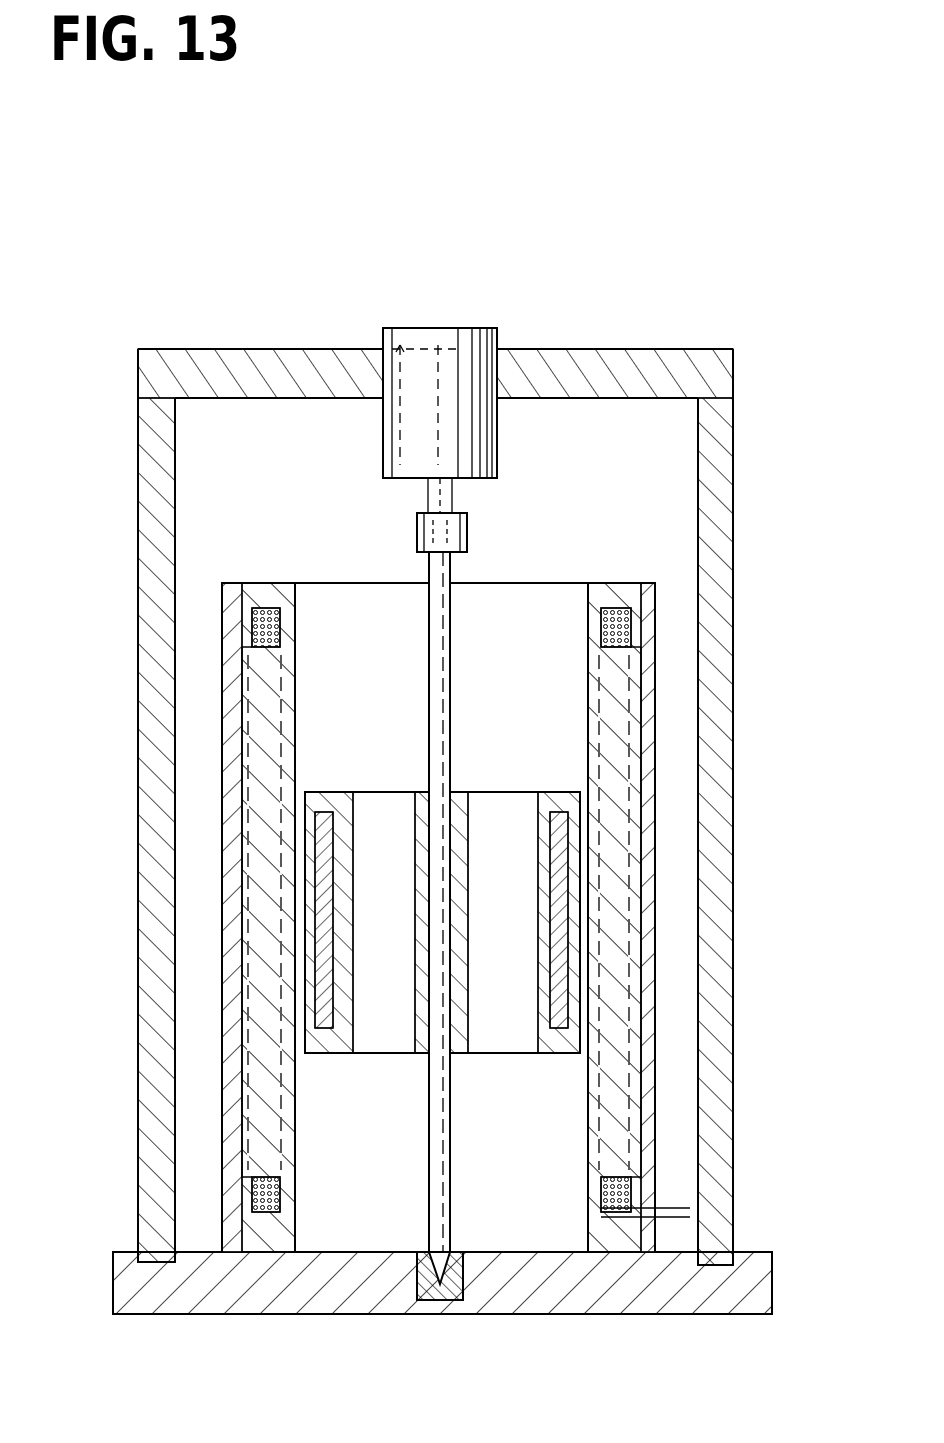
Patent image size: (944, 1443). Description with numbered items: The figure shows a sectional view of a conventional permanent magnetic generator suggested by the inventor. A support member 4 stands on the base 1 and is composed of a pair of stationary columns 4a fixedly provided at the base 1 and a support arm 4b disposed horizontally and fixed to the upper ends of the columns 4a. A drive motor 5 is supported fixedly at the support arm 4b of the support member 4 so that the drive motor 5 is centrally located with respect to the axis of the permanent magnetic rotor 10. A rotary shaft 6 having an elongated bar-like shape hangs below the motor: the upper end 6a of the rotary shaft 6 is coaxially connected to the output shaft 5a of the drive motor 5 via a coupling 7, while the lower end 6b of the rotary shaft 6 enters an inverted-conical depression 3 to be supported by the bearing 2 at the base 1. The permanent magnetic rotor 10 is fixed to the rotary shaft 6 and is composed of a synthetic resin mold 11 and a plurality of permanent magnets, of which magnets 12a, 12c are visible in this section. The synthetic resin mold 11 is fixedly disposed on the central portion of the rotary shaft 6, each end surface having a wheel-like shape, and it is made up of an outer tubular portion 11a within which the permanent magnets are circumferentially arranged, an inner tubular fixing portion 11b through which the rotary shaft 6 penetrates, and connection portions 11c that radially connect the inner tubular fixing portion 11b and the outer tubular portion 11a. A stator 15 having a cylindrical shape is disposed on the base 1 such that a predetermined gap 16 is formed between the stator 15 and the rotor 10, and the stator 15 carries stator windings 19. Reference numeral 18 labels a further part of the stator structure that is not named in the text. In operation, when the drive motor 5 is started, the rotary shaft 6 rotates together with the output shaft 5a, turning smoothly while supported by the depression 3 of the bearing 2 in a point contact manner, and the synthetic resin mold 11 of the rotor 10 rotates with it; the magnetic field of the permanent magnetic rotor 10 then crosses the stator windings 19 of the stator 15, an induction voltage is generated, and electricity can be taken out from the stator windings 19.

The base 1 is at (768, 1253).
The bearing 2 is at (473, 1252).
The inverted-conical depression 3 is at (443, 1258).
The support member 4 is at (436, 767).
The stationary column 4a is at (157, 958).
The support arm 4b is at (598, 368).
The drive motor 5 is at (420, 355).
The output shaft 5a is at (442, 497).
The rotary shaft 6 is at (454, 897).
The upper end of the rotary shaft 6a is at (442, 567).
The lower end of the rotary shaft 6b is at (407, 1208).
The coupling 7 is at (417, 538).
The permanent magnetic rotor 10 is at (440, 913).
The synthetic resin mold 11 is at (515, 955).
The outer tubular portion 11a is at (313, 1060).
The inner tubular fixing portion 11b is at (503, 842).
The connection portion 11c is at (473, 1053).
The permanent magnet 12a is at (522, 920).
The permanent magnet 12c is at (327, 906).
The stator 15 is at (642, 585).
The gap 16 is at (386, 934).
The stator magnet / coil 18 is at (258, 758).
The stator windings 19 is at (265, 600).